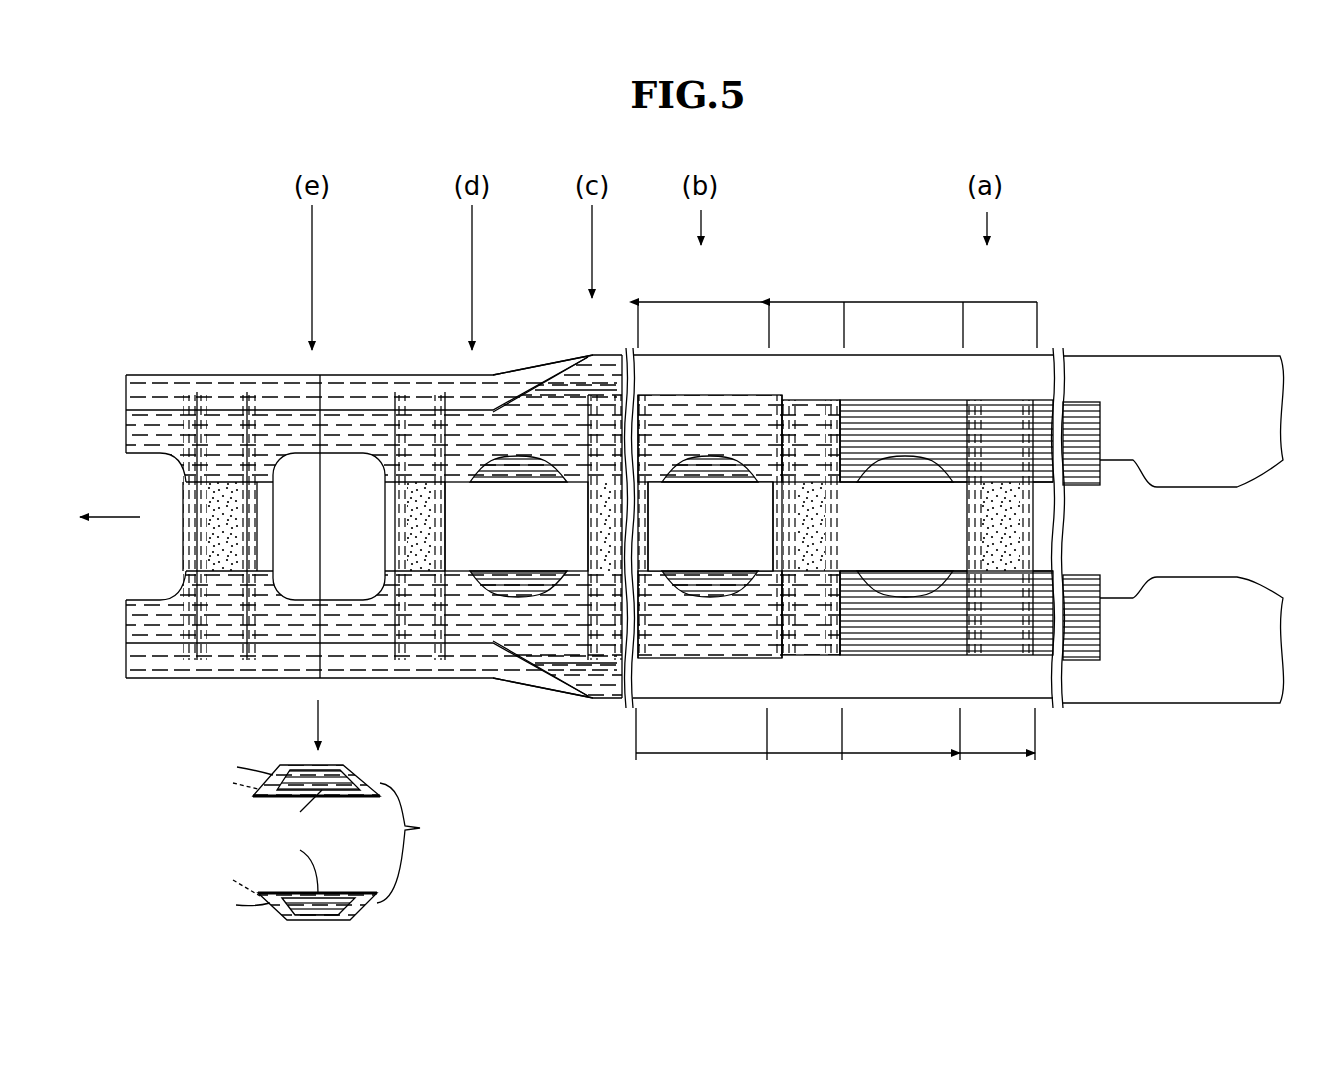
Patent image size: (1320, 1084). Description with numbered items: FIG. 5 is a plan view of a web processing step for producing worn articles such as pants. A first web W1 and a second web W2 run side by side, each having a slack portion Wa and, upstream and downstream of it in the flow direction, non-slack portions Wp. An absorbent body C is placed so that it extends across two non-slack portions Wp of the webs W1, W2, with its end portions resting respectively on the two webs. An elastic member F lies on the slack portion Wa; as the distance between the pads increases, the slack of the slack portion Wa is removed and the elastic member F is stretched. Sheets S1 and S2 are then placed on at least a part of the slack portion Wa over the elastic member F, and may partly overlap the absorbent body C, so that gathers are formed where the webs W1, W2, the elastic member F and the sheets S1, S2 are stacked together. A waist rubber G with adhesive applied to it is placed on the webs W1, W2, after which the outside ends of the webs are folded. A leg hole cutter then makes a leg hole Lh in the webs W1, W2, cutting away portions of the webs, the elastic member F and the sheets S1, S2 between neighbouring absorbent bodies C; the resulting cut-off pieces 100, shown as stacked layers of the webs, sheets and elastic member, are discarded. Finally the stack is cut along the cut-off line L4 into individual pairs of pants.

The first web W1 is at (1163, 368).
The second web W2 is at (1157, 687).
The sheet S1 is at (468, 420).
The sheet S2 is at (468, 628).
The cut-off line L4 is at (322, 403).
The leg hole Lh is at (298, 600).
The absorbent body C is at (213, 539).
The elastic member F is at (513, 573).
The waist rubber G is at (583, 357).
The slack portion Wa is at (799, 532).
The non-slack portion Wp is at (902, 531).
The cut-off piece 100 is at (327, 832).